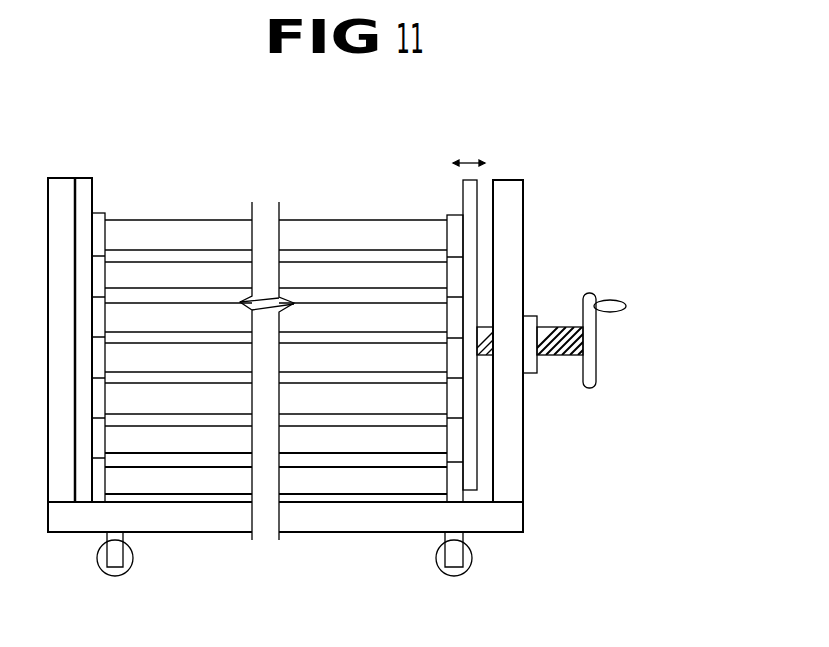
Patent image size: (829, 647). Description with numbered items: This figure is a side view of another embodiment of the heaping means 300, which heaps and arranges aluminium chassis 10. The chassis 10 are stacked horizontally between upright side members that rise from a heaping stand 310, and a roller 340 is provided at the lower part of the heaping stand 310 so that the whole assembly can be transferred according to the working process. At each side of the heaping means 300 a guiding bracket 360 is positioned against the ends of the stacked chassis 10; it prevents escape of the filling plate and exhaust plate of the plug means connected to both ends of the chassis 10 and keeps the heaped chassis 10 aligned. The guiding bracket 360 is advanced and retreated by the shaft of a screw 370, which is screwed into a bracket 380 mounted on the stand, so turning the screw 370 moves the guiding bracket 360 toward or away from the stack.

The heaping means 300 is at (374, 150).
The aluminium chassis 10 is at (357, 438).
The heaping stand 310 is at (527, 538).
The roller 340 is at (451, 578).
The guiding bracket 360 is at (480, 182).
The screw 370 is at (553, 328).
The bracket 380 is at (512, 243).